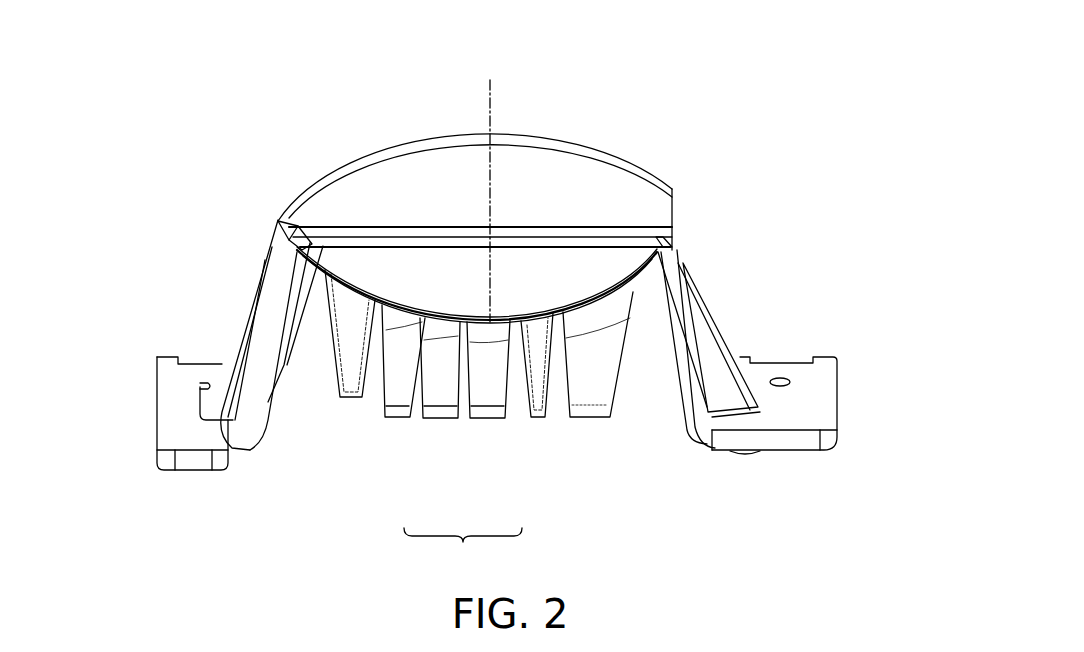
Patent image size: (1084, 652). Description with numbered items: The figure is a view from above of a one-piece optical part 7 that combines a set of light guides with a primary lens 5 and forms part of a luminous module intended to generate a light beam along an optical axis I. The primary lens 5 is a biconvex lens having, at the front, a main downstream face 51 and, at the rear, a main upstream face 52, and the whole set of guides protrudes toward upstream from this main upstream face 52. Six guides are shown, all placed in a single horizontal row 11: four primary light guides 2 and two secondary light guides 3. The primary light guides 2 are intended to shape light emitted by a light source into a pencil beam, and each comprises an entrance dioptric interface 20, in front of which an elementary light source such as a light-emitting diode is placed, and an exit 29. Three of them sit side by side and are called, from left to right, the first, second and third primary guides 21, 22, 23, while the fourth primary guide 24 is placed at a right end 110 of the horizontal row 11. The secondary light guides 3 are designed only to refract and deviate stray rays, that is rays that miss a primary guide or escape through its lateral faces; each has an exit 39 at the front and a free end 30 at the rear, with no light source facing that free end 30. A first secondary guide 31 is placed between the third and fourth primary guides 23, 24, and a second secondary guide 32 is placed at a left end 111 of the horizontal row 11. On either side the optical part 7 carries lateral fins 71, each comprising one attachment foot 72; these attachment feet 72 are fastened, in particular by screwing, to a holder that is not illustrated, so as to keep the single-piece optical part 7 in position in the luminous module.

The primary light guide 2 is at (660, 446).
The secondary light guide 3 is at (345, 350).
The primary lens 5 is at (597, 176).
The one-piece optical part 7 is at (798, 168).
The horizontal row 11 is at (638, 305).
The entrance dioptric interface 20 is at (392, 420).
The first primary guide 21 is at (403, 422).
The second primary guide 22 is at (453, 422).
The third primary guide 23 is at (503, 421).
The fourth primary guide 24 is at (588, 358).
The exit 29 is at (488, 323).
The free end 30 is at (341, 398).
The first secondary guide 31 is at (538, 421).
The second secondary guide 32 is at (348, 385).
The exit 39 is at (370, 293).
The main downstream face 51 is at (538, 140).
The main upstream face 52 is at (318, 277).
The lateral fin 71 is at (270, 317).
The attachment foot 72 is at (168, 435).
The right end 110 is at (648, 284).
The left end 111 is at (307, 233).
The optical axis I is at (487, 86).